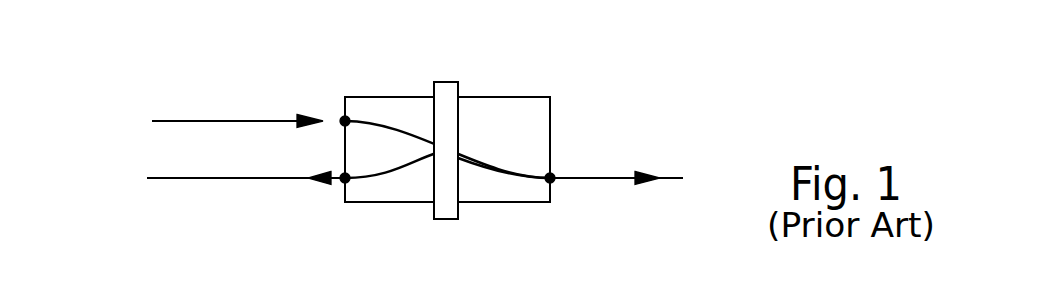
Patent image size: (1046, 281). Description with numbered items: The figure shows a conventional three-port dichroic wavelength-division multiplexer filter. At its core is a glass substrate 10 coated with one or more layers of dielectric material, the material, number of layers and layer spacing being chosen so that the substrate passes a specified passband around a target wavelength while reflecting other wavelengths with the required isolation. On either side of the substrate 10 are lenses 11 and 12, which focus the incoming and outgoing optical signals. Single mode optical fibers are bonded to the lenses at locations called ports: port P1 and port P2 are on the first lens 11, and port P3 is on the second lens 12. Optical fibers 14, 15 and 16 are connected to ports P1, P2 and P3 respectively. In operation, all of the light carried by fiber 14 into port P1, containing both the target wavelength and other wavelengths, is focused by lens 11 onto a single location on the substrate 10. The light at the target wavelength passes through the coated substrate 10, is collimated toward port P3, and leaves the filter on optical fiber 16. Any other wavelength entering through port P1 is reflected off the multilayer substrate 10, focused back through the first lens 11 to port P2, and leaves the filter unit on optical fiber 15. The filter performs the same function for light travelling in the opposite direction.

The glass substrate 10 is at (438, 82).
The lens 11 is at (423, 97).
The lens 12 is at (503, 97).
The optical fiber 14 is at (152, 121).
The optical fiber 15 is at (202, 180).
The optical fiber 16 is at (583, 180).
The port 1 P1 is at (344, 117).
The port 2 P2 is at (344, 182).
The port 3 P3 is at (552, 174).